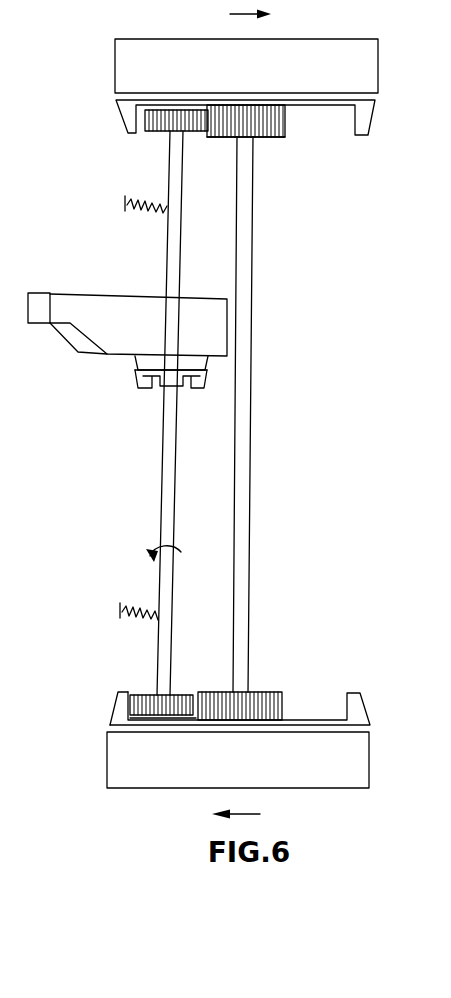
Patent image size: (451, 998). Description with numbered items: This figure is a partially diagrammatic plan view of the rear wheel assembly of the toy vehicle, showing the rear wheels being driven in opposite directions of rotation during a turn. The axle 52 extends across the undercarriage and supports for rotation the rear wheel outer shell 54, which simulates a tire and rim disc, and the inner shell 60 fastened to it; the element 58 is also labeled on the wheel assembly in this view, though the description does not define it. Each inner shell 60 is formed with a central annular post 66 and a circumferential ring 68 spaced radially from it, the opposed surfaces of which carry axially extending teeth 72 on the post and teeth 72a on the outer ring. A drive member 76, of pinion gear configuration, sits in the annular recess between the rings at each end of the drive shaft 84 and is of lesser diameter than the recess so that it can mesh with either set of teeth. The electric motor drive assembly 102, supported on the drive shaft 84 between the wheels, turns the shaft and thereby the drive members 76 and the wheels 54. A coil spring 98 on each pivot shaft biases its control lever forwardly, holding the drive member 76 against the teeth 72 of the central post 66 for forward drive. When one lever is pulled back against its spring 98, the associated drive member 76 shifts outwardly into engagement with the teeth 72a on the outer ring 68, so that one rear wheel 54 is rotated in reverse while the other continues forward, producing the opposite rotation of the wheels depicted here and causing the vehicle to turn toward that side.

The axle 52 is at (249, 472).
The rear wheel outer shell 54 is at (247, 418).
The support bar 58 is at (350, 47).
The inner shell 60 is at (370, 124).
The central annular post 66 is at (275, 137).
The circumferential ring 68 is at (117, 704).
The teeth 72 is at (285, 120).
The teeth 72a is at (346, 702).
The drive member 76 is at (153, 132).
The drive shaft 84 is at (163, 471).
The coil spring 98 is at (148, 217).
The electric motor drive assembly 102 is at (107, 365).